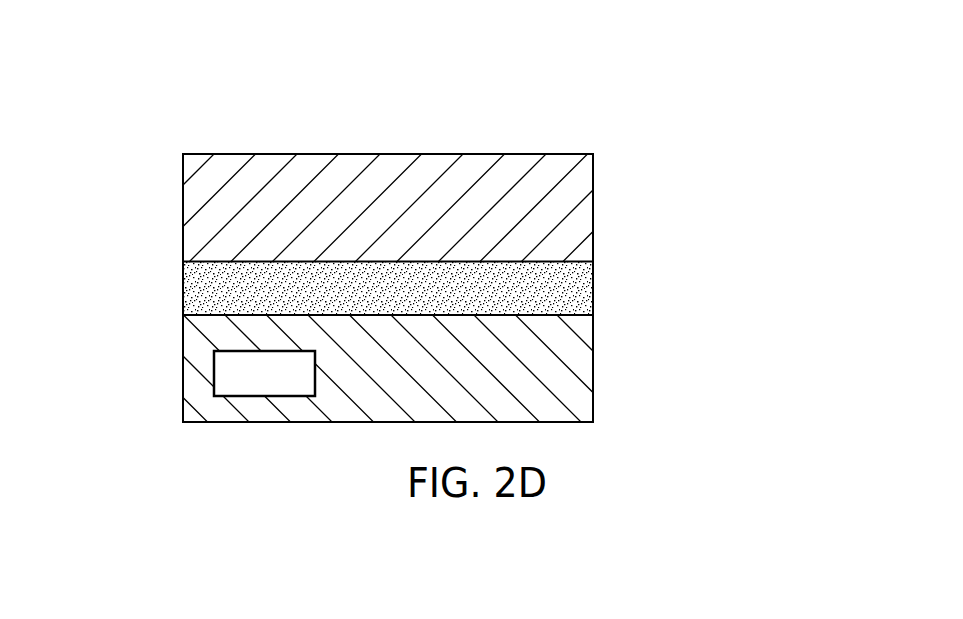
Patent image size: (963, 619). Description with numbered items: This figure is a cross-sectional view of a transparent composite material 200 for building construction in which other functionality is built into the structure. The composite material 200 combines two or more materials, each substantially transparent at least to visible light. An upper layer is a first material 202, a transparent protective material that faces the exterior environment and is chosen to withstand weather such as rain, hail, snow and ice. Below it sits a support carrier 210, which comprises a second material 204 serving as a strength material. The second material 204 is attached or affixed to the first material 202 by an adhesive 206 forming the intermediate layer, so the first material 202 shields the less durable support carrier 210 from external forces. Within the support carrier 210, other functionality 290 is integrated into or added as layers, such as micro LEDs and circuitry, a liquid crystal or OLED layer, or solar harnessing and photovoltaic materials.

The composite material 200 is at (159, 91).
The first material 202 is at (587, 212).
The second material 204 is at (587, 370).
The adhesive 206 is at (587, 287).
The support carrier 210 is at (433, 404).
The other functionality 290 is at (186, 452).